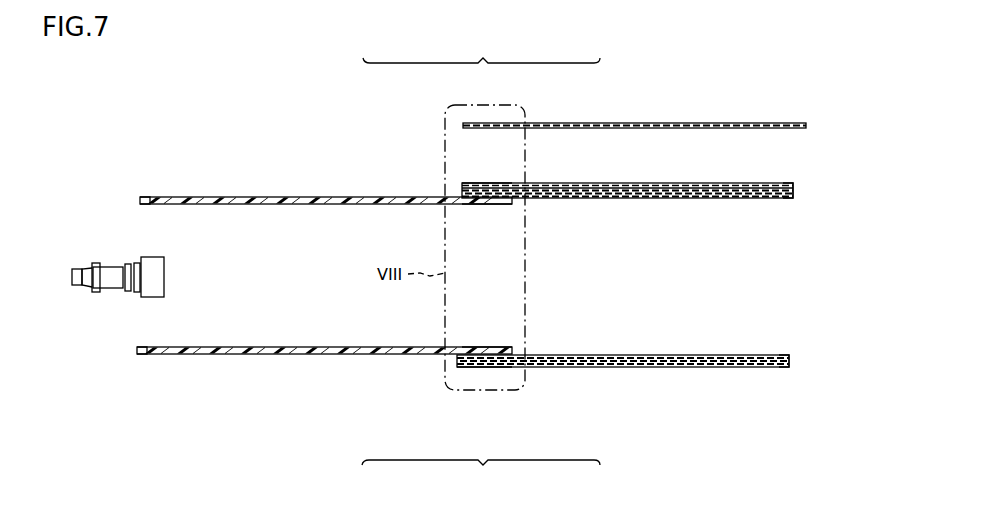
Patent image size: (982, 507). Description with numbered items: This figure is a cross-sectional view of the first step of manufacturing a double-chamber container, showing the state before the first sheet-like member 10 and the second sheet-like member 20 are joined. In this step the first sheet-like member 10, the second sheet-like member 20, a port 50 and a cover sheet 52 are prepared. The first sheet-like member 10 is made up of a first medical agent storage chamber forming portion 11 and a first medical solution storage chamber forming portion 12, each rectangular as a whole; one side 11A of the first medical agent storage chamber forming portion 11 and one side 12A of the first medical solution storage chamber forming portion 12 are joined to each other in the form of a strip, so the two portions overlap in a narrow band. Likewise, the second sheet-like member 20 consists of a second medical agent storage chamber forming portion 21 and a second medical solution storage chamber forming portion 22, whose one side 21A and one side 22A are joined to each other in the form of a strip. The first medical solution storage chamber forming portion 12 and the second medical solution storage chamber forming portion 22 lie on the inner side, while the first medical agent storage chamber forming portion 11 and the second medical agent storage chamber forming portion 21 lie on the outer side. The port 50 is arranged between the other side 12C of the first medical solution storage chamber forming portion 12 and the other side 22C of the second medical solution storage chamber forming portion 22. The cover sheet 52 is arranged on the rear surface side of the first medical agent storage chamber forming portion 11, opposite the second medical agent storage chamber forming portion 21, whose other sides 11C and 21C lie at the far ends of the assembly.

The first sheet-like member 10 is at (481, 50).
The first medical agent storage chamber forming portion 11 is at (583, 183).
The one side of first medical agent storage chamber forming portion 11A is at (486, 197).
The other side of first medical agent storage chamber forming portion 11C is at (772, 190).
The first medical solution storage chamber forming portion 12 is at (381, 197).
The one side of first medical solution storage chamber forming portion 12A is at (484, 205).
The other side of first medical solution storage chamber forming portion 12C is at (152, 197).
The second sheet-like member 20 is at (481, 473).
The second medical agent storage chamber forming portion 21 is at (583, 368).
The one side of second medical agent storage chamber forming portion 21A is at (487, 367).
The other side of second medical agent storage chamber forming portion 21C is at (770, 370).
The second medical solution storage chamber forming portion 22 is at (372, 357).
The one side of second medical solution storage chamber forming portion 22A is at (489, 348).
The other side of second medical solution storage chamber forming portion 22C is at (148, 355).
The port 50 is at (110, 270).
The cover sheet 52 is at (676, 122).